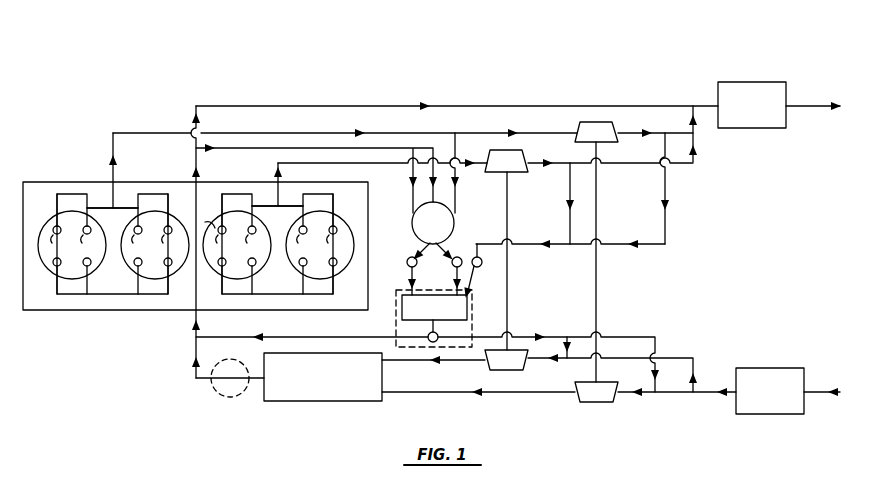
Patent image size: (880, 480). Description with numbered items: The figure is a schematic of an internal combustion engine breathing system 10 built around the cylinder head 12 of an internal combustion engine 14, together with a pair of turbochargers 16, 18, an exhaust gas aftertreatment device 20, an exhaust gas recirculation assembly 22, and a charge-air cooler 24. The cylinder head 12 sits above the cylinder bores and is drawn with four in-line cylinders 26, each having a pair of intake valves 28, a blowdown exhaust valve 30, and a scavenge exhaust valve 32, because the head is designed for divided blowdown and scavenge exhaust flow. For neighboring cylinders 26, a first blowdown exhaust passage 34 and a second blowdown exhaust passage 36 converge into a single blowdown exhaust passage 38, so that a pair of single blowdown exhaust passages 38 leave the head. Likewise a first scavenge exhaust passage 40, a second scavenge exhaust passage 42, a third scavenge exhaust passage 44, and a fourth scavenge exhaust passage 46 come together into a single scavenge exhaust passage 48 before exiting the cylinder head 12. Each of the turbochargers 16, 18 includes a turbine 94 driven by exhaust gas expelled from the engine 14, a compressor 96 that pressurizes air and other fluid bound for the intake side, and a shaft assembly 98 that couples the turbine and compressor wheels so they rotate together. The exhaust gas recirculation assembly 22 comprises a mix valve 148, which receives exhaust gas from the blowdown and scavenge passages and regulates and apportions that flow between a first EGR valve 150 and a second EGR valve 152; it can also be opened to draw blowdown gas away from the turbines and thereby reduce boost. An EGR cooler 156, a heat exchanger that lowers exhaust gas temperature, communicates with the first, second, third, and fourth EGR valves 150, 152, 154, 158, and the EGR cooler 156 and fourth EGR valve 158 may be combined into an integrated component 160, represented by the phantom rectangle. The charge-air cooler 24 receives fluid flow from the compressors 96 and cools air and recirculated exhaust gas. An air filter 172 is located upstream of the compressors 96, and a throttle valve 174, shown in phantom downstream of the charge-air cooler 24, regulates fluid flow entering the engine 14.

The internal combustion engine breathing system 10 is at (556, 66).
The cylinder head 12 is at (64, 178).
The internal combustion engine 14 is at (72, 313).
The turbocharger 16 is at (533, 152).
The turbocharger 18 is at (622, 128).
The exhaust gas aftertreatment device 20 is at (752, 80).
The exhaust gas recirculation assembly 22 is at (468, 234).
The charge-air cooler 24 is at (321, 405).
The cylinder 26 is at (52, 272).
The intake valve 28 is at (61, 265).
The blowdown exhaust valve 30 is at (198, 229).
The scavenge exhaust valve 32 is at (198, 223).
The first blowdown exhaust passage 34 is at (100, 205).
The second blowdown exhaust passage 36 is at (130, 202).
The single blowdown exhaust passage 38 is at (116, 198).
The first scavenge exhaust passage 40 is at (57, 198).
The second scavenge exhaust passage 42 is at (222, 198).
The third scavenge exhaust passage 44 is at (198, 222).
The fourth scavenge exhaust passage 46 is at (364, 192).
The single scavenge exhaust passage 48 is at (197, 188).
The turbine 94 is at (576, 124).
The compressor 96 is at (506, 372).
The shaft assembly 98 is at (508, 275).
The mix valve 148 is at (424, 222).
The first EGR valve 150 is at (407, 262).
The second EGR valve 152 is at (452, 262).
The third EGR valve 154 is at (482, 264).
The EGR cooler 156 is at (470, 312).
The fourth EGR valve 158 is at (436, 342).
The integrated component 160 is at (410, 348).
The air filter 172 is at (772, 382).
The throttle valve 174 is at (222, 397).